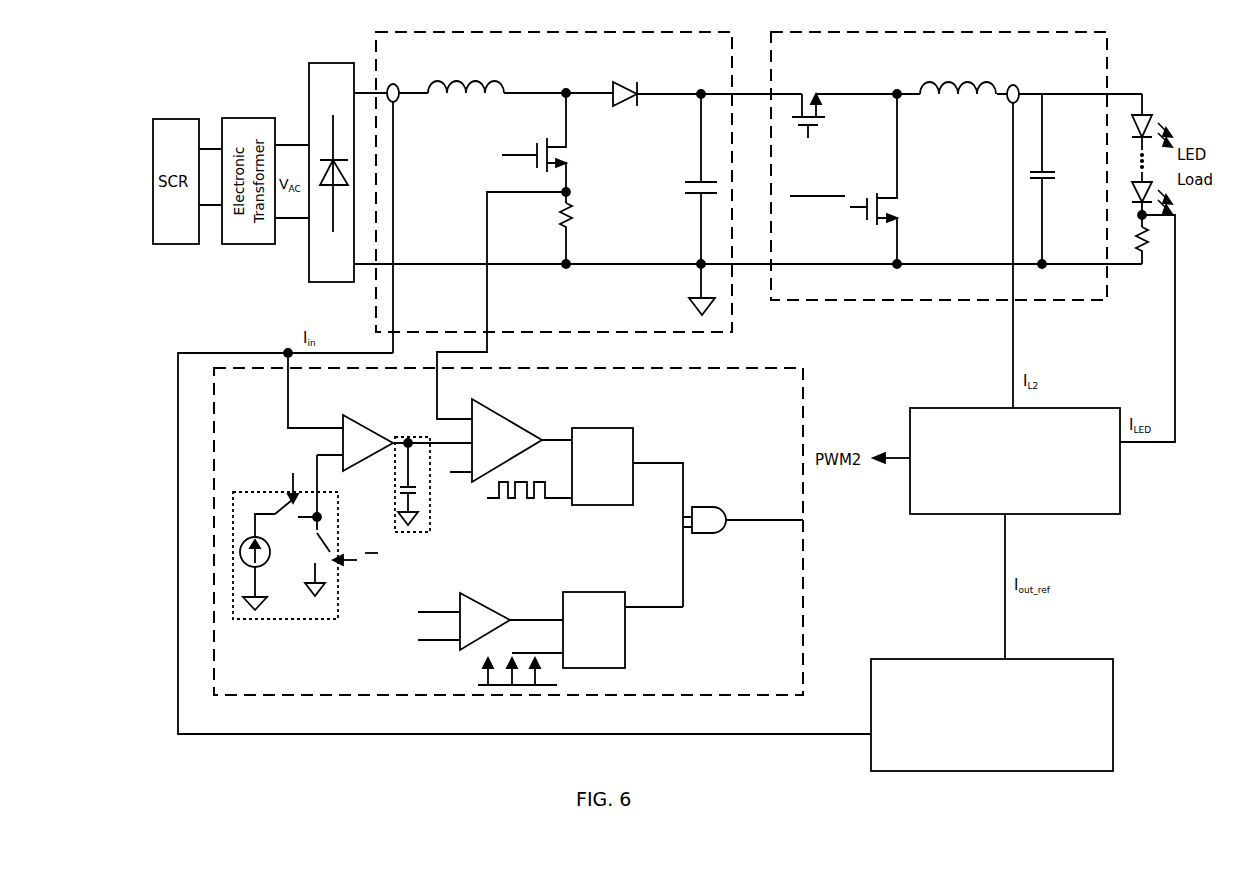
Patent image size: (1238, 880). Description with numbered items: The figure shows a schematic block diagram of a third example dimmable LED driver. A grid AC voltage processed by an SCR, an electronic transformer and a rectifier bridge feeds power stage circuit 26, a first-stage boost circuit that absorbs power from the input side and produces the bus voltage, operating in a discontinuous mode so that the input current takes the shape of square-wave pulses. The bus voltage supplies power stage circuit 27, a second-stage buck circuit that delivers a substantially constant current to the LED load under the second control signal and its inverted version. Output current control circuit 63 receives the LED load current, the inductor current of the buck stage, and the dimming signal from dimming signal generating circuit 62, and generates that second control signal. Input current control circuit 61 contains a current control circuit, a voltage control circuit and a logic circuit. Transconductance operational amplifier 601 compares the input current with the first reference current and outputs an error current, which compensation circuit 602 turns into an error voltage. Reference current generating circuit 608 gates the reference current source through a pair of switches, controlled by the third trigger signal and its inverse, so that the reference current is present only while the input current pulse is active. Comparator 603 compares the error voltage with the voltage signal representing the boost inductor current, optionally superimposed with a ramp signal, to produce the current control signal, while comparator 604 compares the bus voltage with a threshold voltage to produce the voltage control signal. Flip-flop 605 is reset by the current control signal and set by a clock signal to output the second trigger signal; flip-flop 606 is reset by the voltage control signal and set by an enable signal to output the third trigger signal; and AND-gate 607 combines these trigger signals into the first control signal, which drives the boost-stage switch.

The power stage circuit 26 is at (567, 32).
The power stage circuit 27 is at (937, 32).
The input current control circuit 61 is at (508, 524).
The dimming signal generating circuit 62 is at (992, 715).
The output current control circuit 63 is at (1015, 461).
The transconductance operational amplifier 601 is at (373, 427).
The compensation circuit 602 is at (408, 535).
The comparator 603 is at (490, 440).
The comparator 604 is at (485, 617).
The flip-flop 605 is at (585, 477).
The flip-flop 606 is at (580, 638).
The AND-gate 607 is at (706, 524).
The reference current generating circuit 608 is at (318, 625).